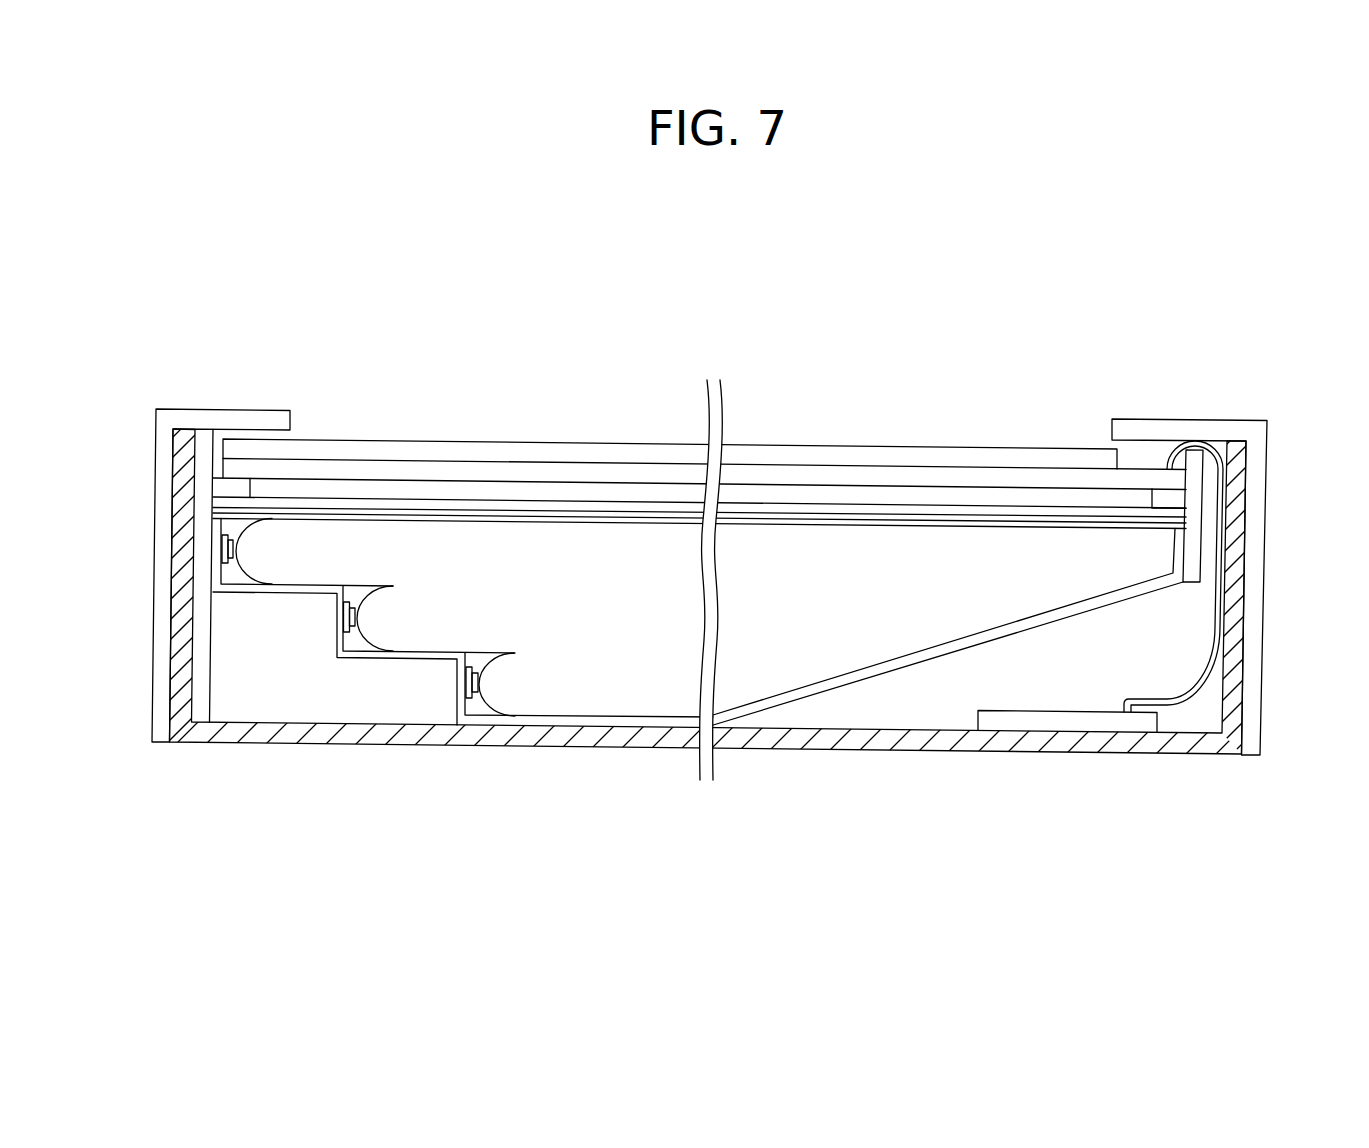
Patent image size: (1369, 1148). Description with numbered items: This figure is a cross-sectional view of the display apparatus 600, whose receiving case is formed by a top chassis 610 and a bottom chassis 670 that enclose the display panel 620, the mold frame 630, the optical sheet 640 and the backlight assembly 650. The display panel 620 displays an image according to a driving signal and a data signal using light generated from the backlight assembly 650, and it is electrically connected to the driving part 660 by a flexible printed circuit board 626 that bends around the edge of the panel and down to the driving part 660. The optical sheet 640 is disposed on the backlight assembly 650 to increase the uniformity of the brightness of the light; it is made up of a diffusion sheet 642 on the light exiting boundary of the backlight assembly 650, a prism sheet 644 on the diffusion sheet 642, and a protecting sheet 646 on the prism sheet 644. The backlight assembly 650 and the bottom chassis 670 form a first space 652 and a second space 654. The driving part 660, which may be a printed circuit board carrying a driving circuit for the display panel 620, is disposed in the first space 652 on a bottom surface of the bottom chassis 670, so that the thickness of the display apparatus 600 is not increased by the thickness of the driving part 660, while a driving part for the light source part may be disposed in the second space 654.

The display apparatus 600 is at (1111, 359).
The top chassis 610 is at (1253, 569).
The display panel 620 is at (404, 428).
The flexible printed circuit board 626 is at (1210, 658).
The mold frame 630 is at (205, 437).
The optical sheet 640 is at (643, 340).
The diffusion sheet 642 is at (624, 520).
The prism sheet 644 is at (576, 511).
The protecting sheet 646 is at (523, 503).
The backlight assembly 650 is at (322, 630).
The first space 652 is at (1098, 678).
The second space 654 is at (262, 682).
The driving part 660 is at (1023, 722).
The bottom chassis 670 is at (1183, 742).